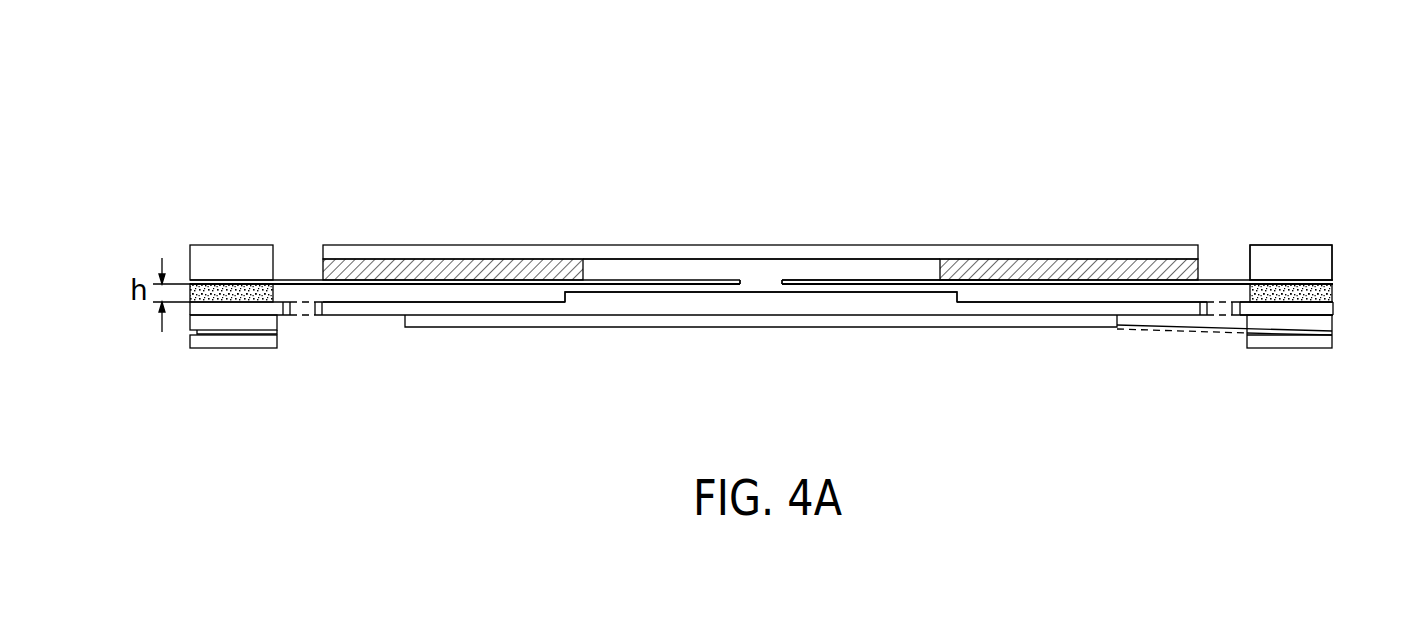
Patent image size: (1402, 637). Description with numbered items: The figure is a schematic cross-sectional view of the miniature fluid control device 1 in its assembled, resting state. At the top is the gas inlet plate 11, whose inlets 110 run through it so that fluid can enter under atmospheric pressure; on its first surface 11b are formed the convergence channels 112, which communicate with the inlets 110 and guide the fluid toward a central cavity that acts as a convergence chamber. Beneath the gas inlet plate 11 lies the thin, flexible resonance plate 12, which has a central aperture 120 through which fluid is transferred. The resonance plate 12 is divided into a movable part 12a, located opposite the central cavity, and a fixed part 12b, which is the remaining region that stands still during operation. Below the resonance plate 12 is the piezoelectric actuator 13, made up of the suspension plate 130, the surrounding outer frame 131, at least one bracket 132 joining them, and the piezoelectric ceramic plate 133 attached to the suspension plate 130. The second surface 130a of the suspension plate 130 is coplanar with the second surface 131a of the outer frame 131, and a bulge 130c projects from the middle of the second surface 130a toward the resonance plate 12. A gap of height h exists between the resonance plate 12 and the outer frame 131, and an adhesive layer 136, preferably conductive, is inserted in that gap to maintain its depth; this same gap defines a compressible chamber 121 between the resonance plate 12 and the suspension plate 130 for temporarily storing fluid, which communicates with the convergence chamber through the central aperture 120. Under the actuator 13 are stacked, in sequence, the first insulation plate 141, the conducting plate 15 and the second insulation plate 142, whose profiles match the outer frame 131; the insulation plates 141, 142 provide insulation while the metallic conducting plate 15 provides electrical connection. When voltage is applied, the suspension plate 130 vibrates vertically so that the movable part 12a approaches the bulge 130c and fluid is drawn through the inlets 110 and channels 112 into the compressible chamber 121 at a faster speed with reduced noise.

The miniature fluid control device 1 is at (1362, 57).
The gas inlet plate 11 is at (1287, 260).
The inlet 110 is at (300, 238).
The convergence channel 112 is at (452, 257).
The first surface 11b is at (677, 262).
The resonance plate 12 is at (975, 200).
The movable part 12a is at (832, 280).
The fixed part 12b is at (968, 280).
The central aperture 120 is at (757, 270).
The compressible chamber 121 is at (470, 290).
The piezoelectric actuator 13 is at (1325, 309).
The suspension plate 130 is at (1035, 310).
The second surface 130a is at (1150, 300).
The bulge 130c is at (618, 290).
The outer frame 131 is at (256, 306).
The second surface 131a is at (212, 302).
The bracket 132 is at (320, 305).
The piezoelectric ceramic plate 133 is at (779, 320).
The adhesive layer 136 is at (1333, 287).
The first insulation plate 141 is at (1305, 320).
The second insulation plate 142 is at (1267, 343).
The conducting plate 15 is at (1333, 329).